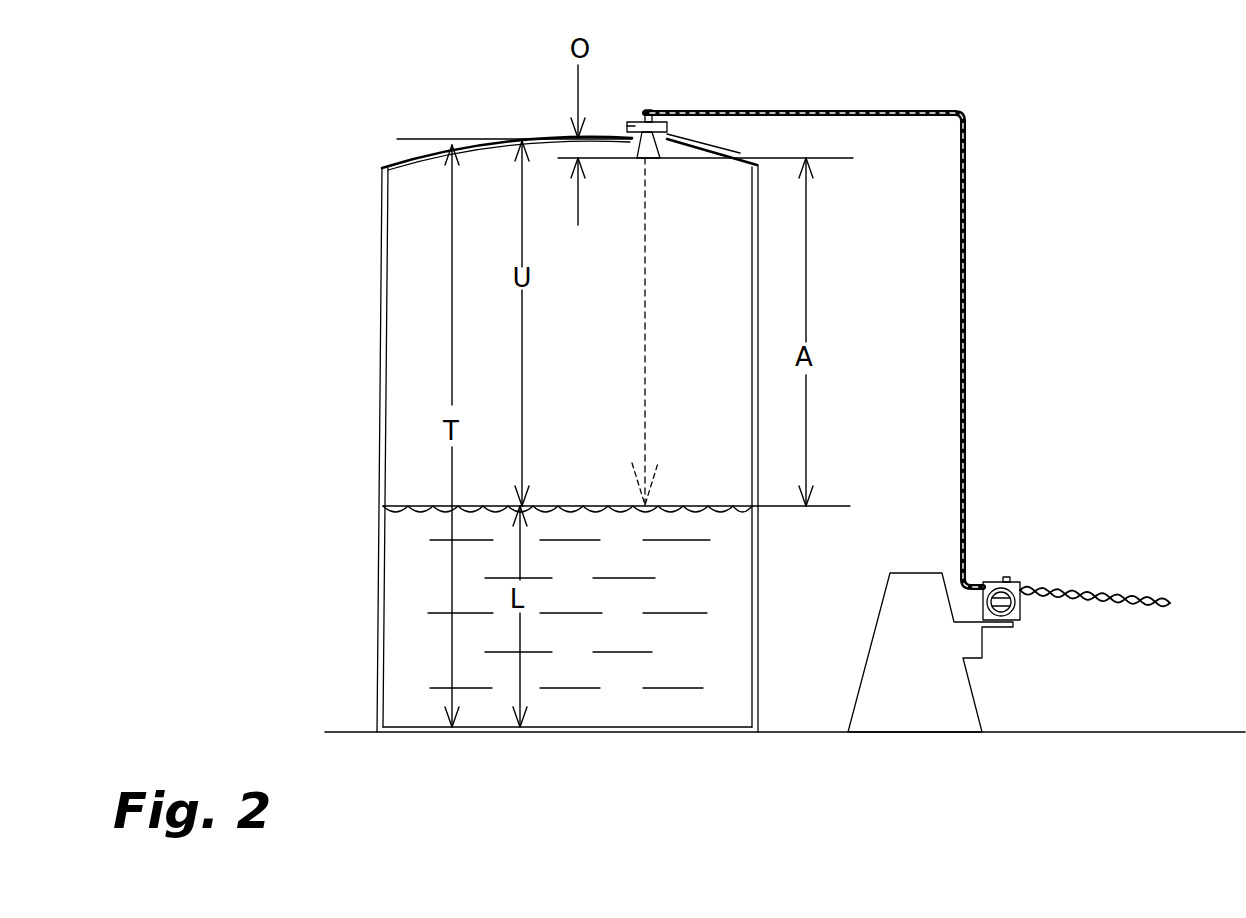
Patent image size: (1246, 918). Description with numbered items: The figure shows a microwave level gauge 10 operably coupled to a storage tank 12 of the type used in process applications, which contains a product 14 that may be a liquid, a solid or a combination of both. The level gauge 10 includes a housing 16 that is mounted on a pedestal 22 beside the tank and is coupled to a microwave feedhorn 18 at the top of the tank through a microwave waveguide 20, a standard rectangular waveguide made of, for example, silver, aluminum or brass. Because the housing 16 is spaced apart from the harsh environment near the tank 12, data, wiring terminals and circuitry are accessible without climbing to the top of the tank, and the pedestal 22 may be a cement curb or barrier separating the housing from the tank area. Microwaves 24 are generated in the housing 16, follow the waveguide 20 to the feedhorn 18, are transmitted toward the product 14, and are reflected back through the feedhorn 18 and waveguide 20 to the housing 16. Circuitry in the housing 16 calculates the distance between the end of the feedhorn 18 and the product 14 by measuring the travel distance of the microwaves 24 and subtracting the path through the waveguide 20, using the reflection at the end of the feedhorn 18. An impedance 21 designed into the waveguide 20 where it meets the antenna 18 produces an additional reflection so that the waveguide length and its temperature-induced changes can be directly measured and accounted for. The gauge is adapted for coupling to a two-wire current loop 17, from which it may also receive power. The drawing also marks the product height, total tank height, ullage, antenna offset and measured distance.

The microwave level gauge 10 is at (1043, 208).
The storage tank 12 is at (380, 231).
The product 14 is at (395, 592).
The housing 16 is at (1021, 584).
The current loop 17 is at (1123, 603).
The microwave feedhorn 18 is at (668, 138).
The microwave waveguide 20 is at (967, 114).
The impedance 21 is at (643, 122).
The pedestal 22 is at (930, 677).
The microwaves 24 is at (651, 256).